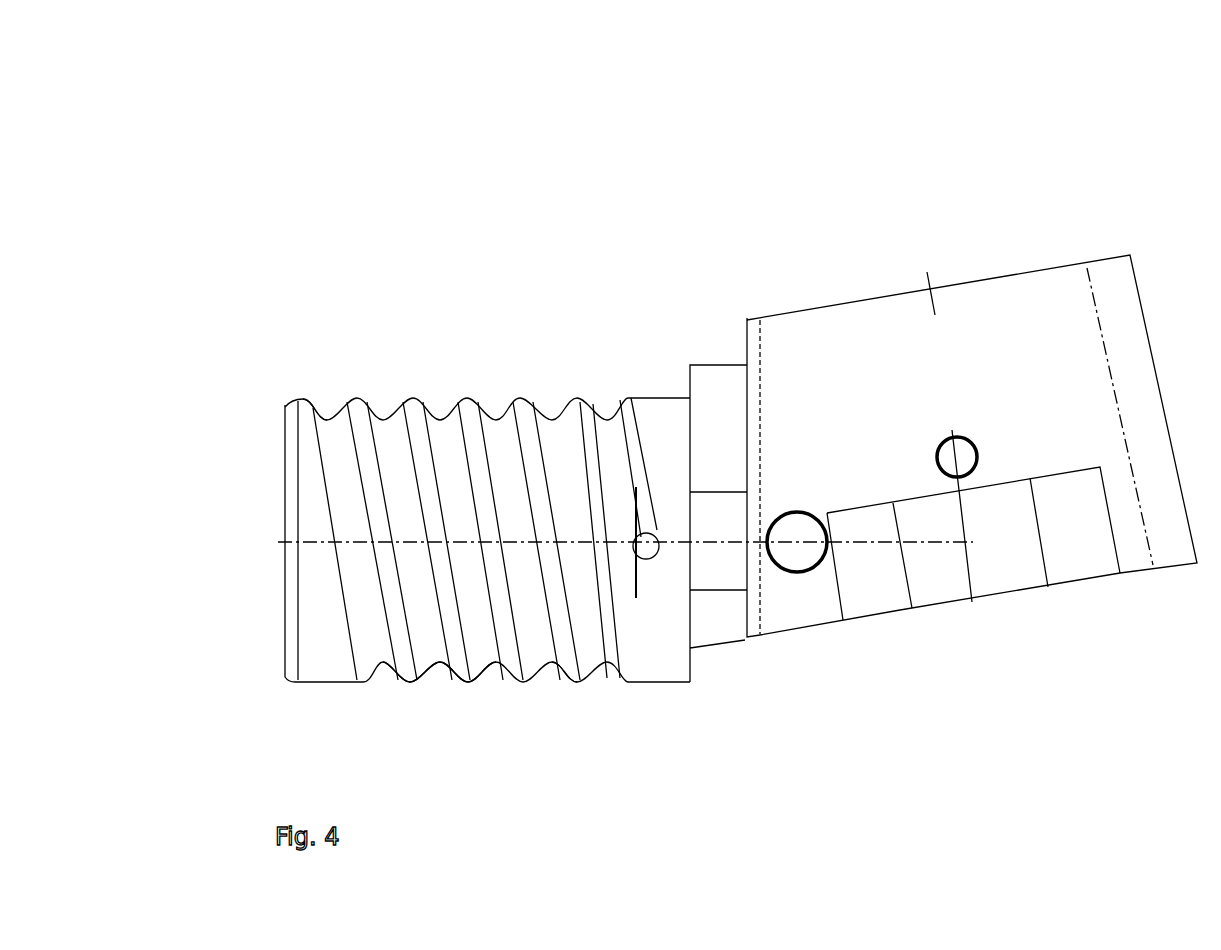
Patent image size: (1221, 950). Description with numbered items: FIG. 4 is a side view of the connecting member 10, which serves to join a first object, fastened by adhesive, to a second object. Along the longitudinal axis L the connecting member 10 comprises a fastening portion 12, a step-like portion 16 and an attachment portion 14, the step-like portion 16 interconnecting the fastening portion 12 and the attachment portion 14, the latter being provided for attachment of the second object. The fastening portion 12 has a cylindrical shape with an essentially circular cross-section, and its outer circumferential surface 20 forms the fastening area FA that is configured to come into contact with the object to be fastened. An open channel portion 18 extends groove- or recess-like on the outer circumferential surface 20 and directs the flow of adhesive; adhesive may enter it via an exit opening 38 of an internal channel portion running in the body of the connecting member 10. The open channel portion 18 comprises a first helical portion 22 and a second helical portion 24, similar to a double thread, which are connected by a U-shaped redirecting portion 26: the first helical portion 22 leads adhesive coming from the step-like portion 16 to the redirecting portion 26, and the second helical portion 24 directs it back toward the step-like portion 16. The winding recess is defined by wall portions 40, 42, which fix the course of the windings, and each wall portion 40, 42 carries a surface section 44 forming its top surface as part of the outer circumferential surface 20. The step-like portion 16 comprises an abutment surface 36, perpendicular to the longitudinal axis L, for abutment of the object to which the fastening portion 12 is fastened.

The connecting member 10 is at (972, 135).
The fastening portion 12 is at (560, 267).
The attachment portion 14 is at (1095, 228).
The step-like portion 16 is at (707, 373).
The open channel portion 18 is at (493, 373).
The outer circumferential surface 20 is at (318, 683).
The first helical portion 22 is at (392, 417).
The second helical portion 24 is at (328, 483).
The redirecting portion 26 is at (327, 407).
The abutment surface 36 is at (690, 383).
The exit opening 38 is at (615, 385).
The wall portion 40 is at (425, 417).
The wall portion 42 is at (360, 403).
The surface section 44 is at (397, 683).
The fastening area FA is at (573, 683).
The longitudinal axis L is at (618, 543).